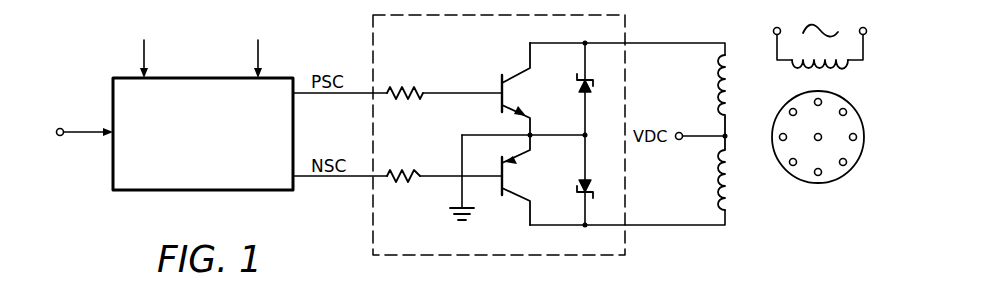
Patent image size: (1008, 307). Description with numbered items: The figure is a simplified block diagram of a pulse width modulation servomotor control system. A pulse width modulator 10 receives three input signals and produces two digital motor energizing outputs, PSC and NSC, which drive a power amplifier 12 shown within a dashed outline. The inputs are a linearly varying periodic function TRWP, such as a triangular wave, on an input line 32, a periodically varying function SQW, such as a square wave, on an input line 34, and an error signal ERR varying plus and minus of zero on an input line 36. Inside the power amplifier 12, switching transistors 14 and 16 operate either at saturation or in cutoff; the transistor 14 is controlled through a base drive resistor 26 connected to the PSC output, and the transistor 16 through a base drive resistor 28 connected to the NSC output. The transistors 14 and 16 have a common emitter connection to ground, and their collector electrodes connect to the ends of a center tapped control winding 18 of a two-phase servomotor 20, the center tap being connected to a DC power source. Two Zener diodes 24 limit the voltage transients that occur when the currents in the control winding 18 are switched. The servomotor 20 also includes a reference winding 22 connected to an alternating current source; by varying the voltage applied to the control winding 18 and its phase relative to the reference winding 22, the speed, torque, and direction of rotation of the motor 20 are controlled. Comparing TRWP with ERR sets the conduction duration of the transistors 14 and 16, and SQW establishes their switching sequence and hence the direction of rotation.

The pulse width modulator 10 is at (167, 183).
The power amplifier 12 is at (523, 256).
The switching transistor 14 is at (515, 77).
The switching transistor 16 is at (512, 195).
The center tapped control winding 18 is at (745, 125).
The two-phase servomotor 20 is at (792, 194).
The reference winding 22 is at (850, 70).
The Zener diodes 24 is at (595, 80).
The base drive resistor 26 is at (405, 88).
The base drive resistor 28 is at (400, 172).
The input line 32 is at (144, 50).
The input line 34 is at (258, 52).
The input line 36 is at (82, 136).